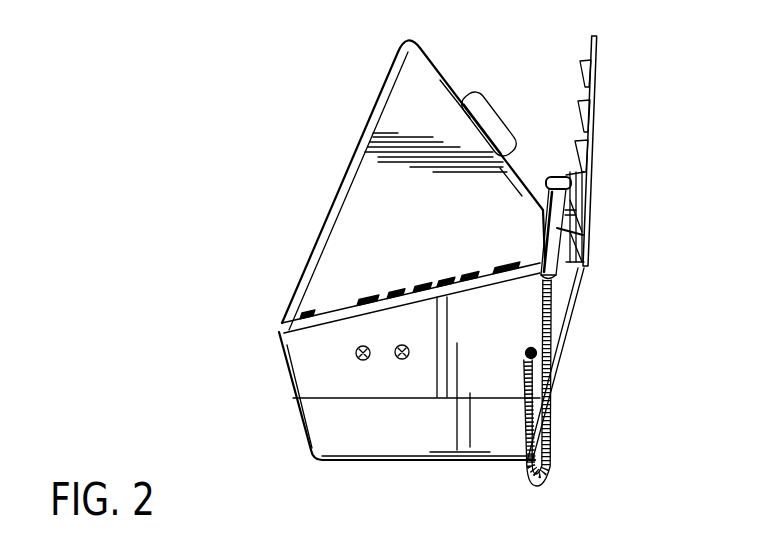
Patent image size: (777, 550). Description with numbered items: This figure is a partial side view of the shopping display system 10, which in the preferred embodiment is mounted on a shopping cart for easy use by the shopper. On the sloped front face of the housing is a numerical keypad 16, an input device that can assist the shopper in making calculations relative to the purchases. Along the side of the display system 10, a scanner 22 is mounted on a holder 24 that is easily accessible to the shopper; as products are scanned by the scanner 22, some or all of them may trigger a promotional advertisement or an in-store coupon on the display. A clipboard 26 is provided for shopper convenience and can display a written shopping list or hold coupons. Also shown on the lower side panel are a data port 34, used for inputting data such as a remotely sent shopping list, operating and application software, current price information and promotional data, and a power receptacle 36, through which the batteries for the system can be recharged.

The display system 10 is at (332, 200).
The numerical keypad 16 is at (348, 308).
The scanner 22 is at (600, 183).
The holder 24 is at (583, 229).
The clipboard 26 is at (595, 40).
The data port 34 is at (359, 359).
The power receptacle 36 is at (401, 360).